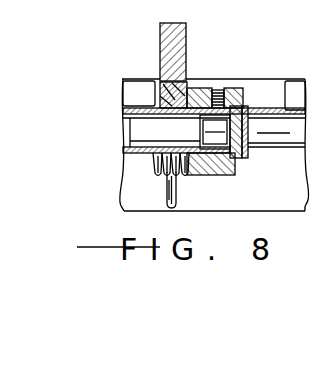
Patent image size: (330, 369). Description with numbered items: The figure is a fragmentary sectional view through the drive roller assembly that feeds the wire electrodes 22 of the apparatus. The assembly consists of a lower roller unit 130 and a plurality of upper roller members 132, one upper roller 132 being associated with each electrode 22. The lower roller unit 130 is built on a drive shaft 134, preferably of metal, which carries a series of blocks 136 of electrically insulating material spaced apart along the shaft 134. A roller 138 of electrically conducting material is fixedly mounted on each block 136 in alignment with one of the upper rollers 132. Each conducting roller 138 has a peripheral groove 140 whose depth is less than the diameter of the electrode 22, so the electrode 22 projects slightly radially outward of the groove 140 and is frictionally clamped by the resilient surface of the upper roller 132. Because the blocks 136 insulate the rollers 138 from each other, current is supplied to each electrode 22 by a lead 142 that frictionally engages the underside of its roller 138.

The electrode 22 is at (150, 97).
The lower roller unit 130 is at (252, 87).
The upper roller member 132 is at (174, 47).
The drive shaft 134 is at (281, 127).
The block 136 is at (235, 173).
The roller 138 is at (154, 170).
The peripheral groove 140 is at (178, 189).
The lead 142 is at (166, 196).